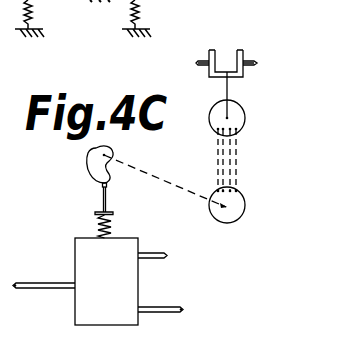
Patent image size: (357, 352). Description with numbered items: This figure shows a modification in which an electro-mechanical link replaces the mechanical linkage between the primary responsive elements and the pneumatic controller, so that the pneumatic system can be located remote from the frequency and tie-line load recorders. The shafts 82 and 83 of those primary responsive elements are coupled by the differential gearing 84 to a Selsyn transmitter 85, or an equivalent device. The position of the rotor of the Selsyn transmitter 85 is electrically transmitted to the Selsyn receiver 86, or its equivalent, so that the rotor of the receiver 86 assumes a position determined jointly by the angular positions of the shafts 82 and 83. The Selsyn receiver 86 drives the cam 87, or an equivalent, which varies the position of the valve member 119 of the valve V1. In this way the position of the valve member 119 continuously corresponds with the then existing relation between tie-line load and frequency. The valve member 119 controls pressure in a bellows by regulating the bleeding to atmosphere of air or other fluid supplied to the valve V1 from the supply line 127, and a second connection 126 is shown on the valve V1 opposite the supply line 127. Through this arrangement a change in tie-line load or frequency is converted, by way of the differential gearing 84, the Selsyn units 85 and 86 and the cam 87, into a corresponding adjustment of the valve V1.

The differential gearing 84 is at (242, 39).
The shaft 82 is at (206, 65).
The shaft 83 is at (254, 65).
The Selsyn transmitter 85 is at (238, 117).
The Selsyn receiver 86 is at (245, 203).
The cam 87 is at (90, 162).
The valve member 119 is at (99, 198).
The valve V1 is at (80, 265).
The inlet pipe 126 is at (28, 289).
The supply line 127 is at (157, 313).